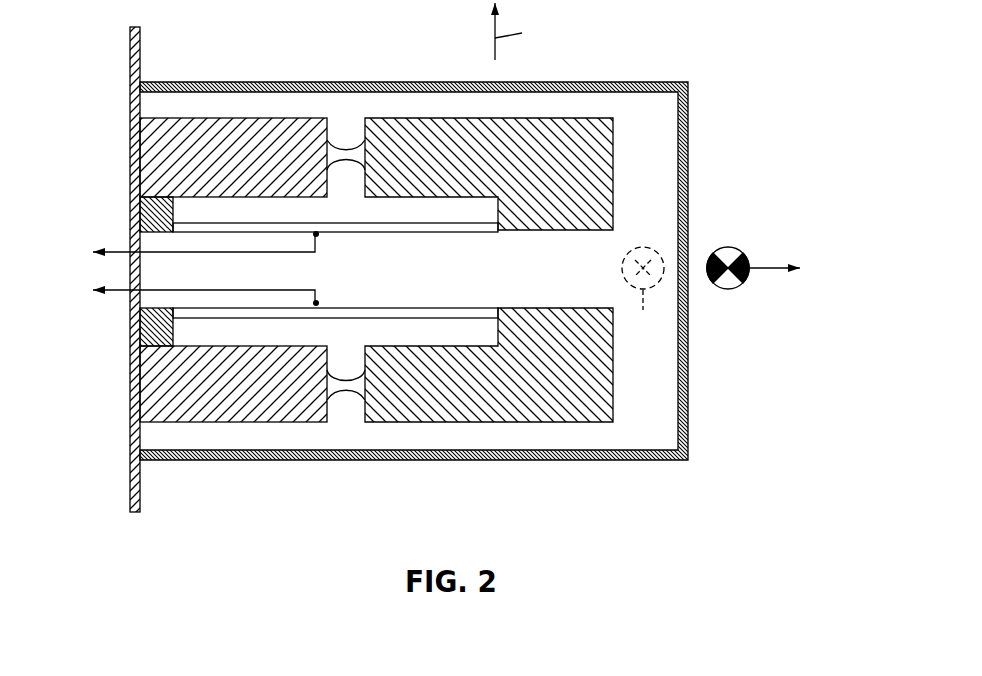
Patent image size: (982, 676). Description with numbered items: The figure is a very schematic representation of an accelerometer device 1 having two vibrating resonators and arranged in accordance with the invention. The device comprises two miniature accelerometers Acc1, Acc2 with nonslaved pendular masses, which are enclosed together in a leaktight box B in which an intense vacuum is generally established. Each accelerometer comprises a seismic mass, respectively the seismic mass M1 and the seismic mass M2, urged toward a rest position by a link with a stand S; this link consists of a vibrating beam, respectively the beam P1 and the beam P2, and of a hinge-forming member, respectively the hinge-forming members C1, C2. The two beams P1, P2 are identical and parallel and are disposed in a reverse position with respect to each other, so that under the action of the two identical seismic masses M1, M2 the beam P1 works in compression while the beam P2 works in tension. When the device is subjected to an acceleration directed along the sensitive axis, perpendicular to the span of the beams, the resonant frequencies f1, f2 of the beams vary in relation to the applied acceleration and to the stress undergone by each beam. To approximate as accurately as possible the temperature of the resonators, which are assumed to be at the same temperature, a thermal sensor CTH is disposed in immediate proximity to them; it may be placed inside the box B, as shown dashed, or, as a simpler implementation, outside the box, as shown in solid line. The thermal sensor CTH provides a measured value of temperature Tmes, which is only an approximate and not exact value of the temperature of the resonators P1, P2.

The accelerometer device 1 is at (447, 240).
The leaktight box B is at (690, 130).
The stand S is at (130, 423).
The miniature accelerometer Acc1 is at (376, 154).
The miniature accelerometer Acc2 is at (376, 394).
The hinge-forming member C1 is at (350, 150).
The hinge-forming member C2 is at (362, 392).
The seismic mass M1 is at (489, 174).
The seismic mass M2 is at (489, 365).
The vibrating beam P1 is at (345, 233).
The vibrating beam P2 is at (412, 307).
The first frequency signal f1 is at (189, 251).
The second frequency signal f2 is at (189, 289).
The thermal sensor CTH is at (738, 273).
The measured value of temperature Tmes is at (735, 249).